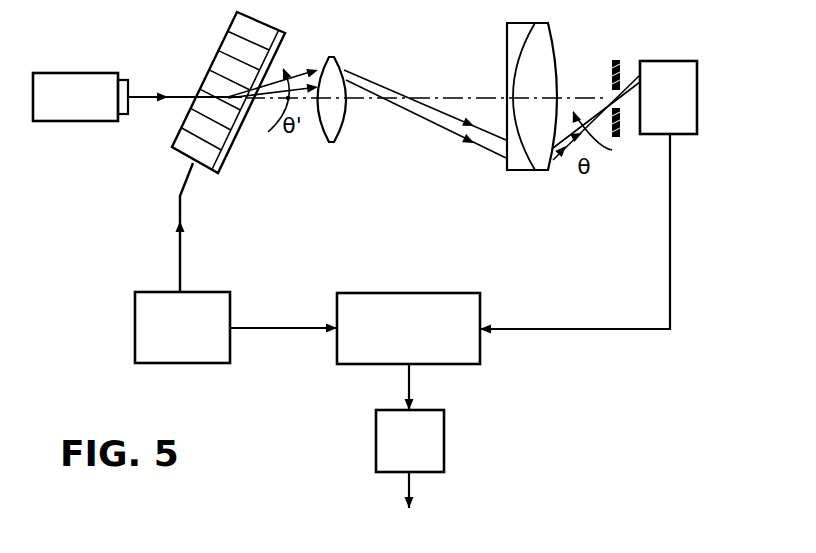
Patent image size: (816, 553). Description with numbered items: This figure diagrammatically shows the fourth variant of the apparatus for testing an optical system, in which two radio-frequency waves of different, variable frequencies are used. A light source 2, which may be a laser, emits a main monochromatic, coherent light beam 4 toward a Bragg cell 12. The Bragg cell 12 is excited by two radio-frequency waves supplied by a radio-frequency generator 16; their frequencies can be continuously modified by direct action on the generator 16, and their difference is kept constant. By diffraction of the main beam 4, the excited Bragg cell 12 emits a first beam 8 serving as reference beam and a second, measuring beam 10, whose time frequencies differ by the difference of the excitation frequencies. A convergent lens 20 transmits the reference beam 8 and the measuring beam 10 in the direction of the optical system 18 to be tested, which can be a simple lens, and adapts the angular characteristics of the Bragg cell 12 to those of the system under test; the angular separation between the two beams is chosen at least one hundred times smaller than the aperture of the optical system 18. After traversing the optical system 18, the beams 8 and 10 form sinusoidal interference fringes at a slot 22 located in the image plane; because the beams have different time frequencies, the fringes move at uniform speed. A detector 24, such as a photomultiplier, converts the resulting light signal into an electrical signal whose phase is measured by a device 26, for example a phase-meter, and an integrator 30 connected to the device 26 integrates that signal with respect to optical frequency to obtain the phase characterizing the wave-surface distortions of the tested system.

The light source 2 is at (103, 113).
The main light beam 4 is at (147, 95).
The first beam 8 is at (457, 132).
The measuring beam 10 is at (490, 153).
The Bragg cell 12 is at (210, 67).
The radio-frequency generator 16 is at (157, 317).
The optical system to be tested 18 is at (505, 56).
The convergent lens 20 is at (336, 68).
The slot 22 is at (612, 74).
The detector 24 is at (653, 66).
The measuring device 26 is at (452, 343).
The integrator 30 is at (433, 460).